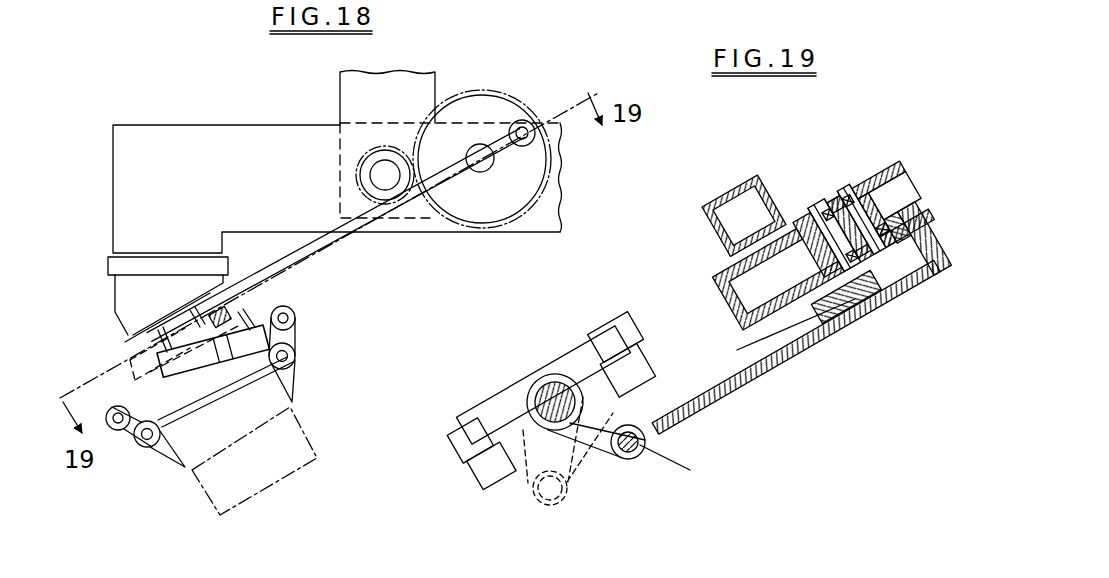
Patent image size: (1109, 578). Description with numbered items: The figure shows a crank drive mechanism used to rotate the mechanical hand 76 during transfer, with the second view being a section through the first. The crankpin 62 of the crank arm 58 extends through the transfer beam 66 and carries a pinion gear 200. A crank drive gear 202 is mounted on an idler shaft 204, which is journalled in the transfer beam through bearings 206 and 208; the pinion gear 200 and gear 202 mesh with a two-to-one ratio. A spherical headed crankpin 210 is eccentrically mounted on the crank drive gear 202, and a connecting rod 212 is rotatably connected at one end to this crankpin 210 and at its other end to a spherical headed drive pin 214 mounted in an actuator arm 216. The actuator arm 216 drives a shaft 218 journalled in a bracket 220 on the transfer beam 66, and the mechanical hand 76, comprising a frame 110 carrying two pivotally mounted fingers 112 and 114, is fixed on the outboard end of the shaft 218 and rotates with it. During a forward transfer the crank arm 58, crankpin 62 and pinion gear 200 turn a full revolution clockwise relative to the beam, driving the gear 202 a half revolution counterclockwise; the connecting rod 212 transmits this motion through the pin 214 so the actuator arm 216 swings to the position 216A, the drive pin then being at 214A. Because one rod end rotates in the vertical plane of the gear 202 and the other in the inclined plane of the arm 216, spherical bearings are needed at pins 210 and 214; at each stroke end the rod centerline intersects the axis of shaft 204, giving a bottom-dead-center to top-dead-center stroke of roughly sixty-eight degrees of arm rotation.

In FIG. 18, the crank arm 58 is at (410, 72).
In FIG. 19, the crank arm 58 is at (744, 215).
In FIG. 18, the crankpin 62 is at (371, 171).
In FIG. 18, the transfer beam 66 is at (208, 128).
In FIG. 19, the transfer beam 66 is at (824, 248).
In FIG. 18, the mechanical hand 76 is at (345, 344).
In FIG. 19, the mechanical hand 76 is at (554, 402).
In FIG. 18, the frame 110 is at (297, 360).
In FIG. 18, the finger 112 is at (293, 402).
In FIG. 18, the finger 114 is at (158, 470).
In FIG. 18, the pinion gear 200 is at (358, 182).
In FIG. 18, the crank drive gear 202 is at (540, 207).
In FIG. 19, the crank drive gear 202 is at (737, 350).
In FIG. 18, the idler shaft 204 is at (482, 150).
In FIG. 19, the idler shaft 204 is at (834, 235).
In FIG. 19, the bearing 206 is at (861, 219).
In FIG. 19, the bearing 208 is at (892, 230).
In FIG. 18, the spherical headed crankpin 210 is at (527, 122).
In FIG. 19, the spherical headed crankpin 210 is at (872, 269).
In FIG. 18, the connecting rod 212 is at (340, 245).
In FIG. 19, the connecting rod 212 is at (796, 347).
In FIG. 18, the spherical headed drive pin 214 is at (232, 300).
In FIG. 19, the spherical headed drive pin 214 is at (689, 464).
In FIG. 19, the pin alternate position 214A is at (548, 510).
In FIG. 18, the actuator arm 216 is at (292, 302).
In FIG. 19, the actuator arm 216 is at (628, 458).
In FIG. 19, the position of actuator arm 216A is at (522, 490).
In FIG. 18, the shaft 218 is at (160, 354).
In FIG. 18, the bracket 220 is at (125, 307).